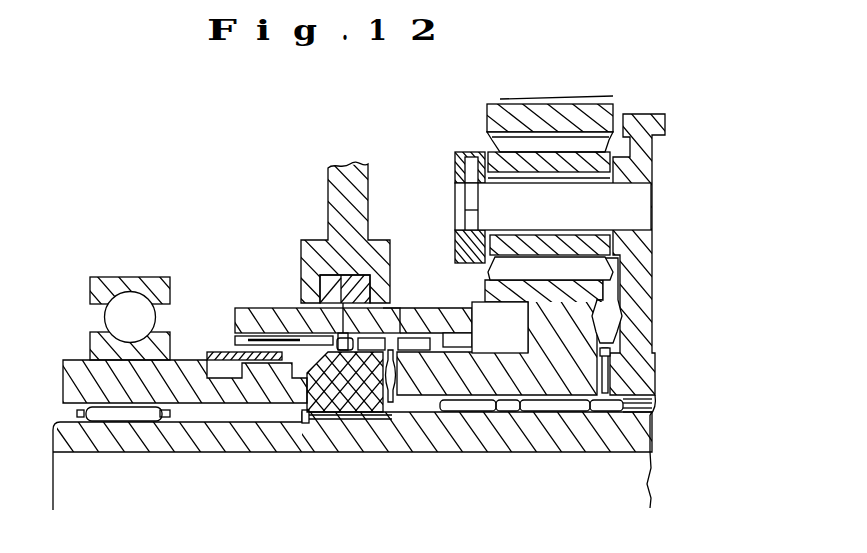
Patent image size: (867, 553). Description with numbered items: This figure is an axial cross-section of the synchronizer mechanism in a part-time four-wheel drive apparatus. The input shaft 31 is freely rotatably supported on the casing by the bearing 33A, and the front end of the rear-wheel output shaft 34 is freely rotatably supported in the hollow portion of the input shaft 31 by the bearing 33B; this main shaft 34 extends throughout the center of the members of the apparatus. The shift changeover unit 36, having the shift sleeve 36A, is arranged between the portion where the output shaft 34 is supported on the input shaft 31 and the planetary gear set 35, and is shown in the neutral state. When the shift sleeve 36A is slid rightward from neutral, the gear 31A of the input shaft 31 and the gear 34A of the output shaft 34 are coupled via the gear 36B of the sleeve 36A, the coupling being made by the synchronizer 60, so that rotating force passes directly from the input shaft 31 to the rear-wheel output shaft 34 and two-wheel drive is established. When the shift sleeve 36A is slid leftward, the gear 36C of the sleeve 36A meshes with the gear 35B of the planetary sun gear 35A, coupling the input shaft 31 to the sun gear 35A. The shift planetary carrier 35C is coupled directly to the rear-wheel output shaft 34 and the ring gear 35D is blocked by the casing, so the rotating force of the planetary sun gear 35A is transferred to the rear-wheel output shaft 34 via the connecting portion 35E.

The input shaft 31 is at (83, 358).
The gear of the input shaft 31A is at (245, 347).
The bearing 33A is at (91, 283).
The bearing 33B is at (90, 410).
The rear-wheel output shaft 34 is at (58, 438).
The gear of the output shaft 34A is at (393, 306).
The planetary gear set 35 is at (443, 181).
The planetary sun gear 35A is at (533, 318).
The gear of the planetary sun gear 35B is at (418, 325).
The shift planetary carrier 35C is at (643, 214).
The ring gear 35D is at (490, 118).
The connecting portion 35E is at (640, 294).
The shift changeover unit 36 is at (310, 184).
The shift sleeve 36A is at (275, 313).
The gear of the sleeve 36B is at (238, 343).
The gear of the sleeve 36C is at (463, 343).
The synchronizer 60 is at (320, 346).